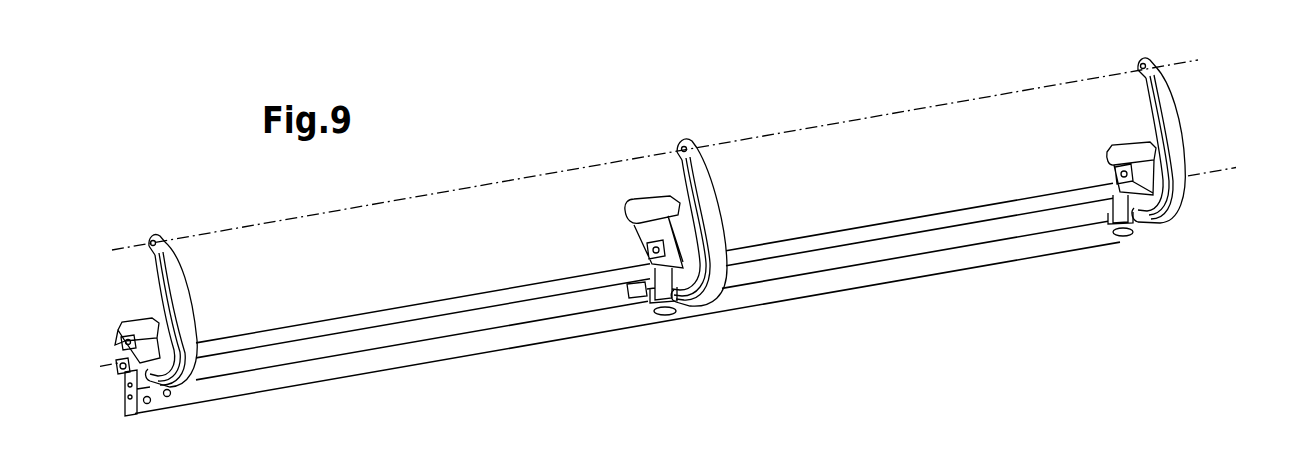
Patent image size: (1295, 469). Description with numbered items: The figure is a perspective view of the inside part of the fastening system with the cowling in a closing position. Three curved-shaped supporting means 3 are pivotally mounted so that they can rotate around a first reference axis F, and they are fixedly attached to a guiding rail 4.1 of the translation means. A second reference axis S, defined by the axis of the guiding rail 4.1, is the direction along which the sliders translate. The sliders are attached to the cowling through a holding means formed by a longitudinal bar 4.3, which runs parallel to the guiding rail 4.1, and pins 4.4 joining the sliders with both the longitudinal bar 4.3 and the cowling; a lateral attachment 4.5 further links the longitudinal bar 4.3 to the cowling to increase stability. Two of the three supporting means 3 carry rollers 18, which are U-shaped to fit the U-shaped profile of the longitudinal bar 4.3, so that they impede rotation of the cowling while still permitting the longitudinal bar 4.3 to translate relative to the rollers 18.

The supporting means 3 is at (187, 317).
The guiding rail 4.1 is at (927, 224).
The longitudinal bar 4.3 is at (900, 272).
The pin 4.4 is at (142, 318).
The lateral attachment 4.5 is at (1138, 158).
The roller 18 is at (668, 318).
The first reference axis F is at (666, 144).
The second reference axis S is at (679, 261).